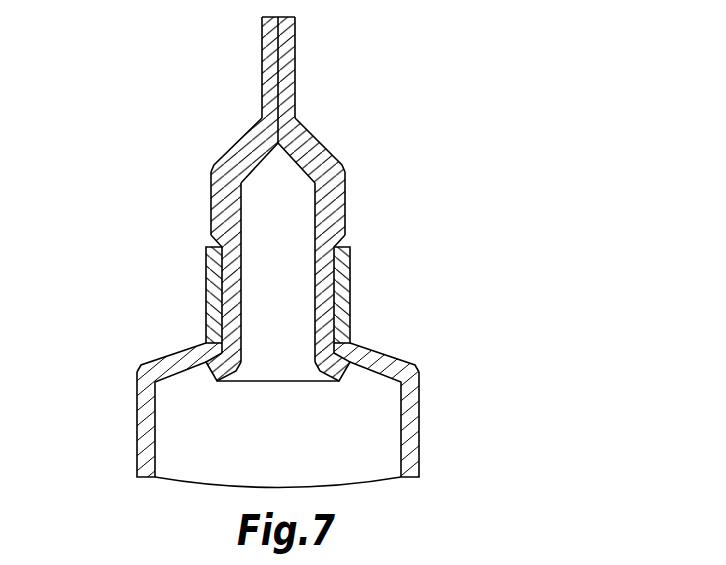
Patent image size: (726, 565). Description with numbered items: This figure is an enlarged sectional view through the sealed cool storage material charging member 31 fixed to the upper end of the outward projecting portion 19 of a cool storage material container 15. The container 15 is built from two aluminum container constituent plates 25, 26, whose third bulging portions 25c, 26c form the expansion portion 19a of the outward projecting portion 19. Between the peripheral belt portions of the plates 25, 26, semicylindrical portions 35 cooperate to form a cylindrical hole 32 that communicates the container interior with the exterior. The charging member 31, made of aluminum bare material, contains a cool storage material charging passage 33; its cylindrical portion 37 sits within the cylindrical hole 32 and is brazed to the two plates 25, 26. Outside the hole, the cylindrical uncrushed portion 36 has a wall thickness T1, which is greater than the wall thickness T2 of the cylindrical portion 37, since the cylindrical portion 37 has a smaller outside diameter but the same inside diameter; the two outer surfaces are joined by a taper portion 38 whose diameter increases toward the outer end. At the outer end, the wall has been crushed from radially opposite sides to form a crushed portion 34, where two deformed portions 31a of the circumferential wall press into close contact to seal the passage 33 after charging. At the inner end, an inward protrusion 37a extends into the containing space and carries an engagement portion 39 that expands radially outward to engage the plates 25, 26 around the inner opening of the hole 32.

The cool storage material container 15 is at (490, 357).
The outward projecting portion 19 is at (419, 447).
The expansion portion 19a is at (137, 445).
The container constituent plate 25 is at (137, 472).
The third bulging portion 25c is at (137, 428).
The container constituent plate 26 is at (419, 473).
The third bulging portion 26c is at (419, 423).
The cool storage material charging member 31 is at (185, 138).
The deformed portions 31a is at (266, 38).
The cylindrical hole 32 is at (227, 264).
The cool storage material charging passage 33 is at (310, 209).
The crushed portion 34 is at (297, 82).
The semicylindrical portions 35 is at (206, 324).
The cylindrical uncrushed portion 36 is at (347, 188).
The cylindrical portion 37 is at (230, 291).
The inward protrusion 37a is at (310, 383).
The taper portion 38 is at (350, 247).
The engagement portion 39 is at (218, 383).
The wall thickness of cylindrical uncrushed portion T1 is at (263, 203).
The wall thickness of cylindrical portion T2 is at (290, 280).